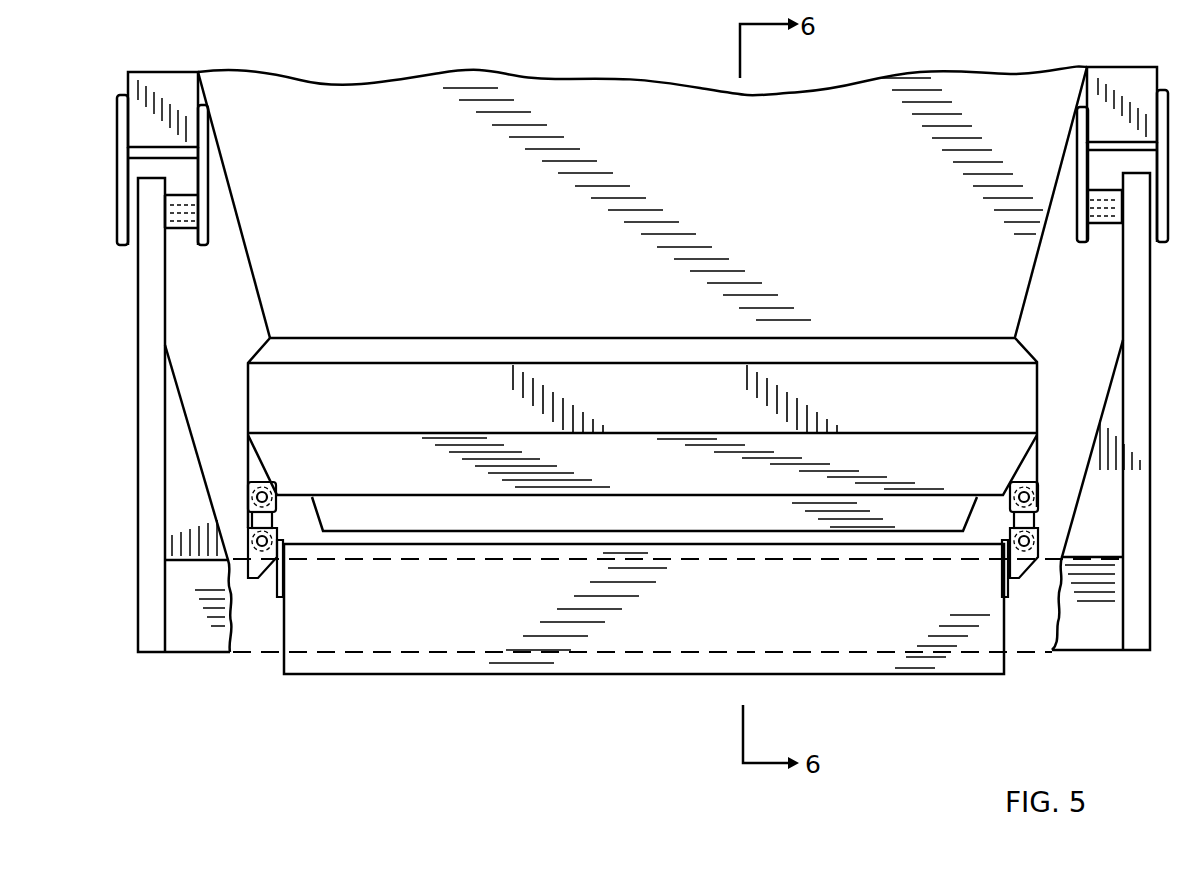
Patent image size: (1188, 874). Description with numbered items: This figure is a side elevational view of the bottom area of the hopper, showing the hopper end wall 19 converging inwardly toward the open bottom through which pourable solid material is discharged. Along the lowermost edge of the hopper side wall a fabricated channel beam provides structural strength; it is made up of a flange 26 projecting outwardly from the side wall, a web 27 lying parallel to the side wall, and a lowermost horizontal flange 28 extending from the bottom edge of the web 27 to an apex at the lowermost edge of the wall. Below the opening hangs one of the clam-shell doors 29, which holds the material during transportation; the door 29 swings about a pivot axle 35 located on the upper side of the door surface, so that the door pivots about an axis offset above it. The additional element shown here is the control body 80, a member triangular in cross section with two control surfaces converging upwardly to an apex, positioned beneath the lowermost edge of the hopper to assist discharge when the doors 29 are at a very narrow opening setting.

The pivot axle 35 is at (180, 192).
The end wall 19 is at (248, 254).
The flange 26 is at (305, 353).
The web 27 is at (378, 390).
The lowermost horizontal flange 28 is at (400, 463).
The door 29 is at (202, 635).
The control body 80 is at (373, 681).